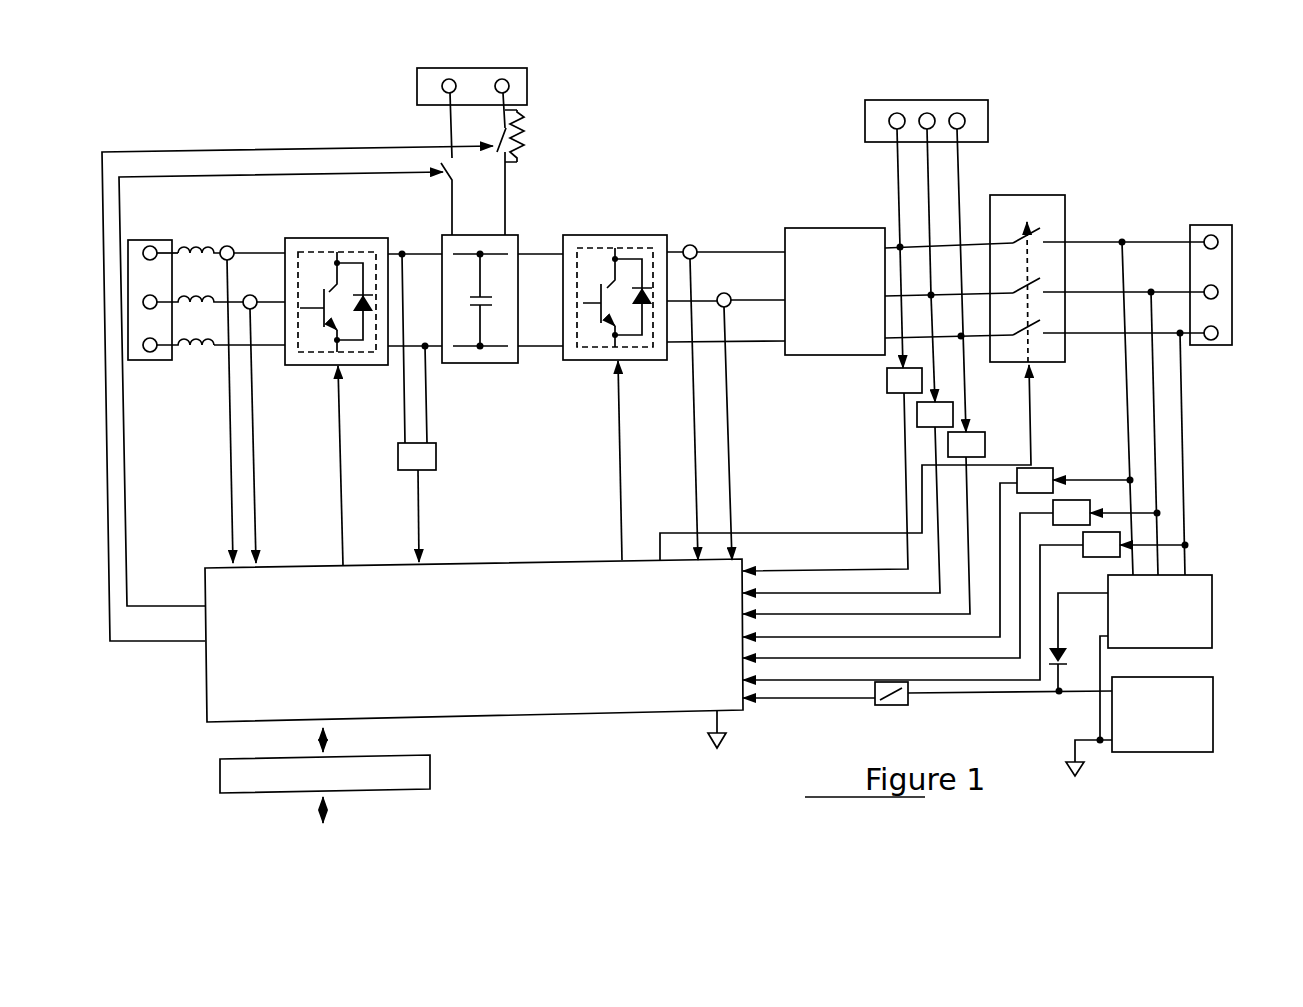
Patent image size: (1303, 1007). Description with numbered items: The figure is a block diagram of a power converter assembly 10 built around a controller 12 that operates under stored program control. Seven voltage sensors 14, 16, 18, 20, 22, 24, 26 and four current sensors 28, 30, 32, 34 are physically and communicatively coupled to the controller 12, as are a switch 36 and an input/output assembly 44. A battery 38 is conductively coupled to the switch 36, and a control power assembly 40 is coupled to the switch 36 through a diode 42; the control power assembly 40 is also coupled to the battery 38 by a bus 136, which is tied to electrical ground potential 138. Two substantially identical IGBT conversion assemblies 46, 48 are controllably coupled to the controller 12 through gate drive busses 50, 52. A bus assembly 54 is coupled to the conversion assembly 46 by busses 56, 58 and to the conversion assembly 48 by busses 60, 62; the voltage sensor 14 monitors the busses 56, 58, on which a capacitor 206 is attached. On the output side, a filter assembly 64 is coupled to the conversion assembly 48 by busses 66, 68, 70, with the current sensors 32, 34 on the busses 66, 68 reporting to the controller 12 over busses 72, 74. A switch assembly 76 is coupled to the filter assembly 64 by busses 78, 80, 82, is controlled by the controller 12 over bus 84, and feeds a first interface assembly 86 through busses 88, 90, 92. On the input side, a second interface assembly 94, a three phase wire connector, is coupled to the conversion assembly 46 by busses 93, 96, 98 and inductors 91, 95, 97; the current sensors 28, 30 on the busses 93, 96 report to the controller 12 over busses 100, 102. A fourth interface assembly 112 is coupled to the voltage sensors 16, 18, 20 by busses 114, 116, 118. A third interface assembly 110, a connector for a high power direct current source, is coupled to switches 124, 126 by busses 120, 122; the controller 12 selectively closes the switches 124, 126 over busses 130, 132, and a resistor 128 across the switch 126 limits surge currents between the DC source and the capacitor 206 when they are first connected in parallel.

The power converter assembly 10 is at (1140, 133).
The controller 12 is at (470, 664).
The voltage sensor 14 is at (437, 456).
The voltage sensor 16 is at (887, 381).
The voltage sensor 18 is at (917, 416).
The voltage sensor 20 is at (975, 432).
The voltage sensor 22 is at (1040, 468).
The voltage sensor 24 is at (1075, 500).
The voltage sensor 26 is at (1105, 532).
The current sensor 28 is at (227, 245).
The current sensor 30 is at (250, 294).
The current sensor 32 is at (697, 252).
The current sensor 34 is at (724, 308).
The switch 36 is at (908, 694).
The battery 38 is at (1162, 752).
The control power assembly 40 is at (1212, 632).
The diode 42 is at (1070, 655).
The input/output assembly 44 is at (432, 758).
The conversion assembly 46 is at (362, 366).
The conversion assembly 48 is at (582, 361).
The gate drive bus 50 is at (344, 505).
The gate drive bus 52 is at (622, 494).
The bus assembly 54 is at (506, 232).
The bus 56 is at (410, 258).
The bus 58 is at (430, 350).
The bus 60 is at (520, 236).
The bus 62 is at (540, 350).
The filter assembly 64 is at (800, 339).
The bus 66 is at (768, 250).
The bus 68 is at (747, 305).
The bus 70 is at (768, 345).
The bus 72 is at (695, 446).
The bus 74 is at (732, 446).
The switch assembly 76 is at (1065, 215).
The bus 78 is at (962, 245).
The bus 80 is at (902, 342).
The bus 82 is at (945, 342).
The bus 84 is at (1035, 400).
The first interface assembly 86 is at (1232, 278).
The bus 88 is at (1145, 240).
The bus 90 is at (1165, 288).
The bus 92 is at (1100, 335).
The inductor 91 is at (180, 248).
The bus 93 is at (285, 248).
The second interface assembly 94 is at (150, 360).
The inductor 95 is at (197, 252).
The bus 96 is at (275, 352).
The inductor 97 is at (212, 352).
The bus 98 is at (280, 352).
The bus 100 is at (233, 440).
The bus 102 is at (257, 465).
The third interface assembly 110 is at (417, 86).
The fourth interface assembly 112 is at (988, 115).
The bus 114 is at (897, 158).
The bus 116 is at (928, 184).
The bus 118 is at (957, 150).
The bus 120 is at (452, 121).
The bus 122 is at (522, 112).
The switch 124 is at (440, 180).
The switch 126 is at (498, 160).
The resistor 128 is at (525, 160).
The bus 130 is at (380, 179).
The bus 132 is at (262, 150).
The bus 136 is at (1100, 722).
The electrical ground potential 138 is at (1070, 775).
The capacitor 206 is at (484, 335).